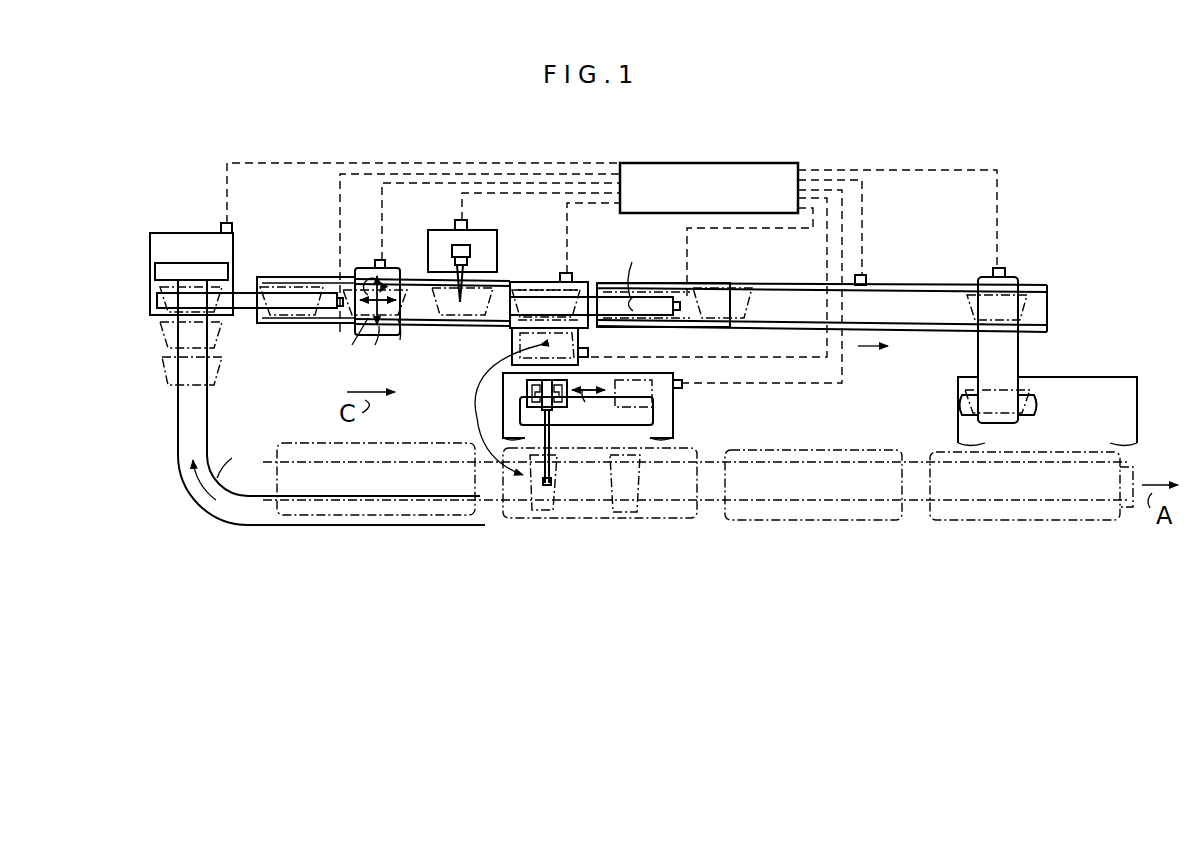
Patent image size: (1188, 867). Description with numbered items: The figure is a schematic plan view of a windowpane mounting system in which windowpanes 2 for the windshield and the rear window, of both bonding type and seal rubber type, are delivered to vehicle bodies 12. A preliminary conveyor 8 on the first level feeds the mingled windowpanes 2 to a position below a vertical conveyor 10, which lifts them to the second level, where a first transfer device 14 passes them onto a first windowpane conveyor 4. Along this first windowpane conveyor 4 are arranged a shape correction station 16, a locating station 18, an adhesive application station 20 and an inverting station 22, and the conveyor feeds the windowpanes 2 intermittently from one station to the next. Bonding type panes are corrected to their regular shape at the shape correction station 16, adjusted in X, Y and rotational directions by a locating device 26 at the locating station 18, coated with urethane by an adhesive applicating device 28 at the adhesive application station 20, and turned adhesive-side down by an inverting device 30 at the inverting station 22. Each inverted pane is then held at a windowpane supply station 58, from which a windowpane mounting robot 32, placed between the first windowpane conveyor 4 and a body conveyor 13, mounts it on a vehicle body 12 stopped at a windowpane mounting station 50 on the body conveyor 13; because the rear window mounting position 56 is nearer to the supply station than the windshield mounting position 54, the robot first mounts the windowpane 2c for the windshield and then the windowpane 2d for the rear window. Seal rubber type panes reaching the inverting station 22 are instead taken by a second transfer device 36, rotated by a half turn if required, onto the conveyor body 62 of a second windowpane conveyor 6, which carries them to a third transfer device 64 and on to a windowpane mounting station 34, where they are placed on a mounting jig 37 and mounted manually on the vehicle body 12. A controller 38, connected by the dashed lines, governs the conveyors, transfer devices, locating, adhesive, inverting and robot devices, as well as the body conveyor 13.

The windowpane 2 is at (163, 373).
The windowpane for the windshield 2c is at (638, 518).
The windowpane for the rear window 2d is at (530, 515).
The first windowpane conveyor 4 is at (305, 332).
The second windowpane conveyor 6 is at (933, 282).
The preliminary conveyor 8 is at (205, 513).
The vertical conveyor 10 is at (150, 255).
The vehicle body 12 is at (370, 518).
The body conveyor 13 is at (710, 505).
The first transfer device 14 is at (249, 315).
The shape correction station 16 is at (300, 268).
The locating station 18 is at (398, 256).
The adhesive application station 20 is at (448, 333).
The inverting station 22 is at (537, 278).
The locating device 26 is at (355, 326).
The adhesive applicating device 28 is at (472, 248).
The inverting device 30 is at (510, 343).
The windowpane mounting robot 32 is at (525, 385).
The windowpane mounting station 34 is at (1027, 387).
The second transfer device 36 is at (610, 290).
The mounting jig 37 is at (957, 403).
The controller 38 is at (726, 162).
The windowpane mounting station 50 is at (593, 532).
The windshield mounting position 54 is at (675, 415).
The rear window mounting position 56 is at (477, 419).
The windowpane supply station 58 is at (583, 340).
The conveyor body 62 is at (925, 333).
The third transfer device 64 is at (1017, 275).